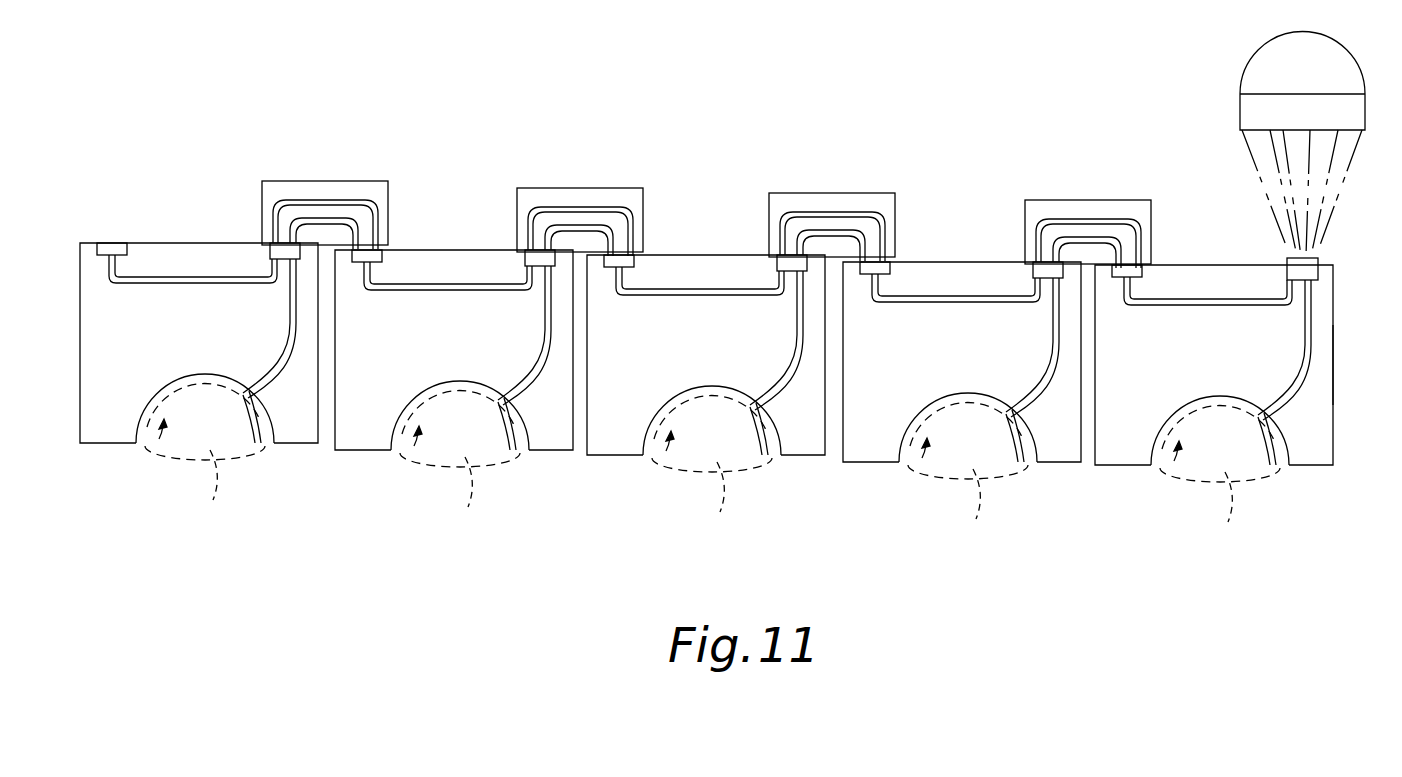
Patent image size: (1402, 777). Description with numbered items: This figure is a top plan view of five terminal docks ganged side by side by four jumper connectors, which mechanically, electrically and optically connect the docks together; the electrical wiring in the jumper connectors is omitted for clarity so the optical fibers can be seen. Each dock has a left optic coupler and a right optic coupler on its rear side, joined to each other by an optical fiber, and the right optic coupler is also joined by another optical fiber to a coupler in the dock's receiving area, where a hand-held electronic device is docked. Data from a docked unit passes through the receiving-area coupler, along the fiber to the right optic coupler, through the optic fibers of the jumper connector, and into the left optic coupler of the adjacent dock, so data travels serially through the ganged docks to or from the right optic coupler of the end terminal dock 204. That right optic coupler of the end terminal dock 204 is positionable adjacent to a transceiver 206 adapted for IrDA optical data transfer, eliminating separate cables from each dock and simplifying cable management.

The end terminal dock 204 is at (1359, 365).
The transceiver 206 is at (1252, 82).